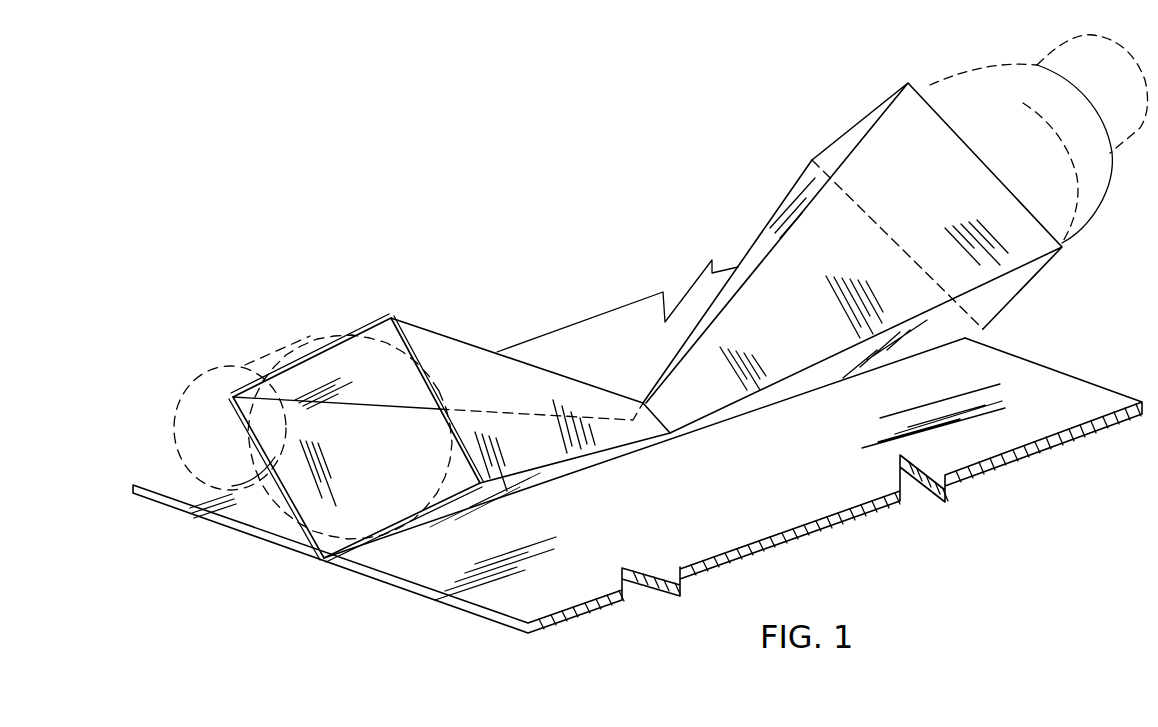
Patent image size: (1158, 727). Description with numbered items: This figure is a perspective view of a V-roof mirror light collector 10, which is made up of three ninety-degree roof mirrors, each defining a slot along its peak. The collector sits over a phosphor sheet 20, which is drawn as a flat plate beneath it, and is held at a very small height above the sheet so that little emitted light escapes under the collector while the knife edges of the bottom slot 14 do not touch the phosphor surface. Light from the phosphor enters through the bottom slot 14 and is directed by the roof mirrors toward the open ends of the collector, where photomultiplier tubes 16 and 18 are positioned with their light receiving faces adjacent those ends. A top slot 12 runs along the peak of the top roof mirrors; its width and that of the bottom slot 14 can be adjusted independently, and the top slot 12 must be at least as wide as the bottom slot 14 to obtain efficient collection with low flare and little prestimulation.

The V-roof mirror light collector 10 is at (621, 364).
The top slot 12 is at (450, 345).
The bottom slot 14 is at (333, 567).
The photomultiplier tube 16 is at (977, 80).
The photomultiplier tube 18 is at (257, 357).
The phosphor sheet 20 is at (998, 443).